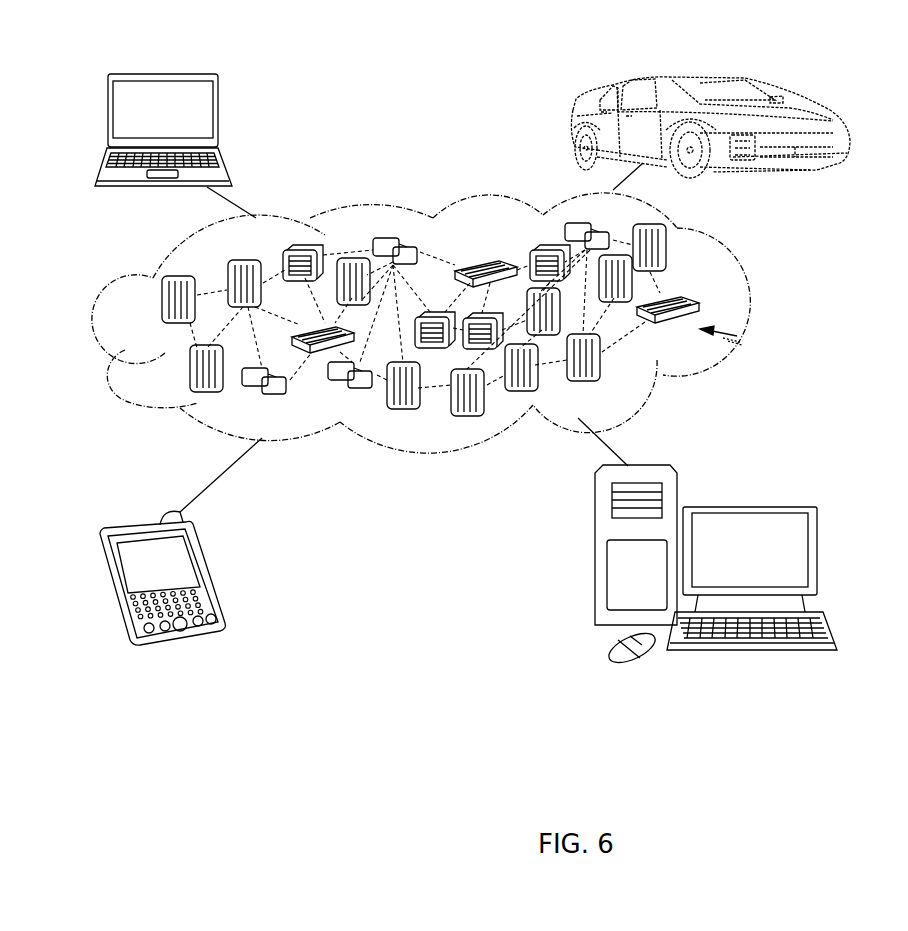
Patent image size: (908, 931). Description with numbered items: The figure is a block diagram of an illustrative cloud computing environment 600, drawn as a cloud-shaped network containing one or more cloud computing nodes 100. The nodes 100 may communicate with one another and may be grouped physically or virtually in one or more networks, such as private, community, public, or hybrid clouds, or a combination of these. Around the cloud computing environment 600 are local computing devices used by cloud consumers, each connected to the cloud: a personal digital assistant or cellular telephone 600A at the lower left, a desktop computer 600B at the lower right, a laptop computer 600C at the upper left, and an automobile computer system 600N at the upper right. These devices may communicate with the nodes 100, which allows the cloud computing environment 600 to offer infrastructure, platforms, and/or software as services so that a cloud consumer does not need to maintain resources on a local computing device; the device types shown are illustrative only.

The cloud computing environment 600 is at (748, 306).
The cloud computing node 100 is at (742, 340).
The personal digital assistant (PDA) or cellular telephone 600A is at (205, 573).
The desktop computer 600B is at (748, 505).
The laptop computer 600C is at (223, 114).
The automobile computer system 600N is at (572, 128).